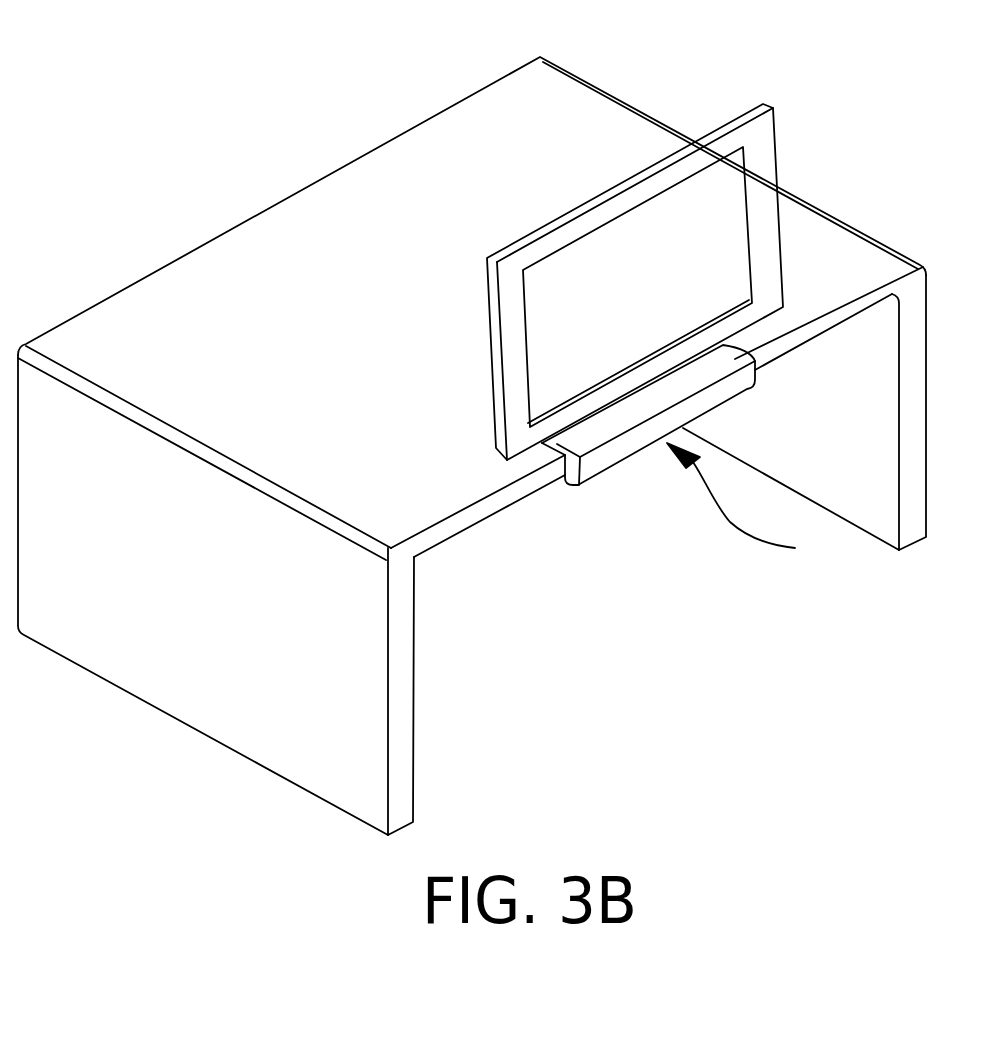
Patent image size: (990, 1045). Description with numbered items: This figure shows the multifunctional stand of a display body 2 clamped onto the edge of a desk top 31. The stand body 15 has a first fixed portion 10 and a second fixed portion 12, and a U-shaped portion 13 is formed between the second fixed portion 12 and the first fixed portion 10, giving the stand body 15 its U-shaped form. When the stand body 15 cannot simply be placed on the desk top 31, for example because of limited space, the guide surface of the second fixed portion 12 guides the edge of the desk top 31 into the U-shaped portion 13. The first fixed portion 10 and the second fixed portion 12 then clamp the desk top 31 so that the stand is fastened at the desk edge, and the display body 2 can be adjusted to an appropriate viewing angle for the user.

The display body 2 is at (727, 180).
The desk top 31 is at (850, 258).
The first fixed portion 10 is at (608, 498).
The second fixed portion 12 is at (598, 430).
The U-shaped portion 13 is at (567, 482).
The stand body 15 is at (754, 519).